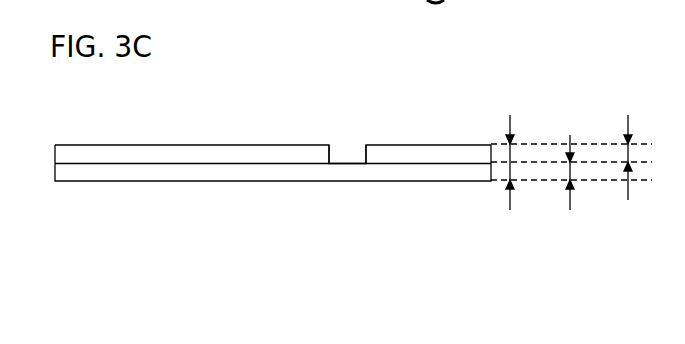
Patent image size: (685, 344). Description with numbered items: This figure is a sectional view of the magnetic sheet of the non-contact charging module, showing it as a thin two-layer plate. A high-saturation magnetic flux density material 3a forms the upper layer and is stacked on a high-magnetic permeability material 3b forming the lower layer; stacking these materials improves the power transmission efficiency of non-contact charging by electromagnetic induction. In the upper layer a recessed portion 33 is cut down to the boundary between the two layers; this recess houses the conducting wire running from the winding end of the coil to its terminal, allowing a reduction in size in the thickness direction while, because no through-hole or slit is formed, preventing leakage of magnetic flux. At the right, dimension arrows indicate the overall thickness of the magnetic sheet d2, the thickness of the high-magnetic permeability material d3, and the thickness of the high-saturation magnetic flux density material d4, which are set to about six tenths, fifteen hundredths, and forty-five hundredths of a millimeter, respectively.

The high-saturation magnetic flux density material 3a is at (83, 153).
The high-magnetic permeability material 3b is at (83, 174).
The recessed portion 33 is at (356, 153).
The thickness of magnetic sheet d2 is at (516, 145).
The thickness of high-magnetic permeability material d3 is at (577, 145).
The thickness of high-saturation magnetic flux density material d4 is at (635, 140).